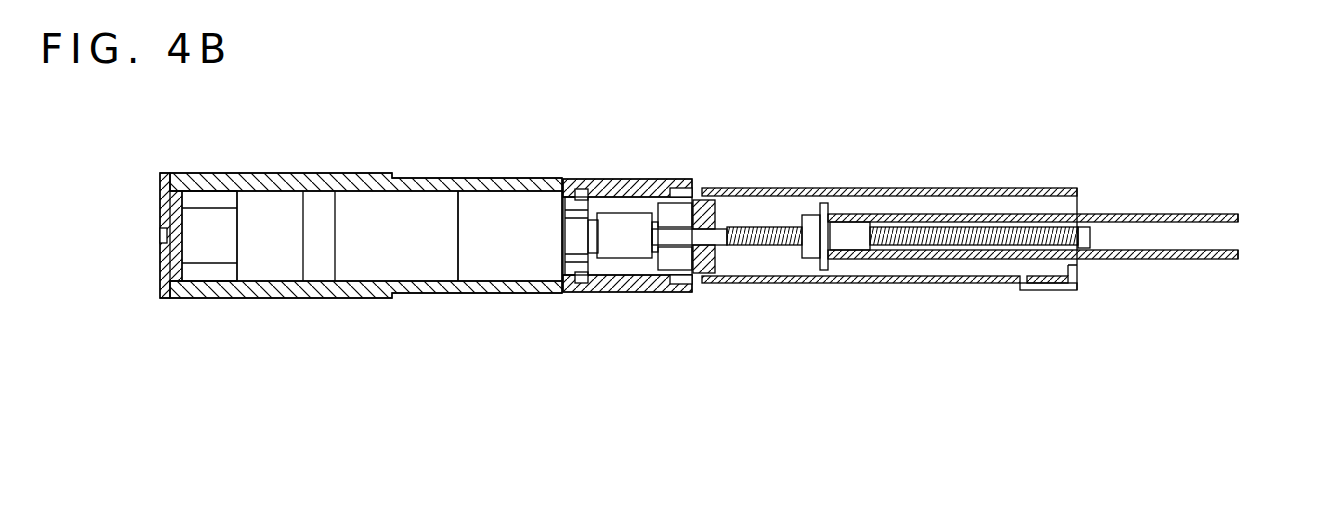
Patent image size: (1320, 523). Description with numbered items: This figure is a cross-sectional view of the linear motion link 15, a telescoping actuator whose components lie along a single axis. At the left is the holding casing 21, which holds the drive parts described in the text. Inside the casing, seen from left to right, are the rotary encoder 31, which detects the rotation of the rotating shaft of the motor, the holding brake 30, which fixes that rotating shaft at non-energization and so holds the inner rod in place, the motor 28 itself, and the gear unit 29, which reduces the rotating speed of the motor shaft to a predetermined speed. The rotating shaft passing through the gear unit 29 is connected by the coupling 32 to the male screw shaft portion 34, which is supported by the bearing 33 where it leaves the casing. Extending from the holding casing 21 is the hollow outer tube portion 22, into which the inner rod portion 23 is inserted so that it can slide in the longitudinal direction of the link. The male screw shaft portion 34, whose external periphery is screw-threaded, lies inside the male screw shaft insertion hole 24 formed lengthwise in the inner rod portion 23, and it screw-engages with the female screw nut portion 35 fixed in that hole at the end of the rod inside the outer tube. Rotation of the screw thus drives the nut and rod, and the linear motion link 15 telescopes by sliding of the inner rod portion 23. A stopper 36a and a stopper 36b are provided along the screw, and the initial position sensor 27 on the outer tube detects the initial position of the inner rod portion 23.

The linear motion link 15 is at (696, 122).
The holding casing 21 is at (505, 187).
The hollow outer tube portion 22 is at (967, 197).
The inner rod portion 23 is at (1200, 260).
The male screw shaft insertion hole 24 is at (1125, 233).
The initial position sensor 27 is at (1043, 285).
The motor 28 is at (373, 237).
The gear unit 29 is at (507, 238).
The holding brake 30 is at (272, 247).
The rotary encoder 31 is at (203, 243).
The coupling 32 is at (625, 238).
The bearing 33 is at (673, 267).
The male screw shaft portion 34 is at (922, 242).
The female screw nut portion 35 is at (847, 240).
The stopper 36a is at (823, 257).
The stopper 36b is at (1082, 238).